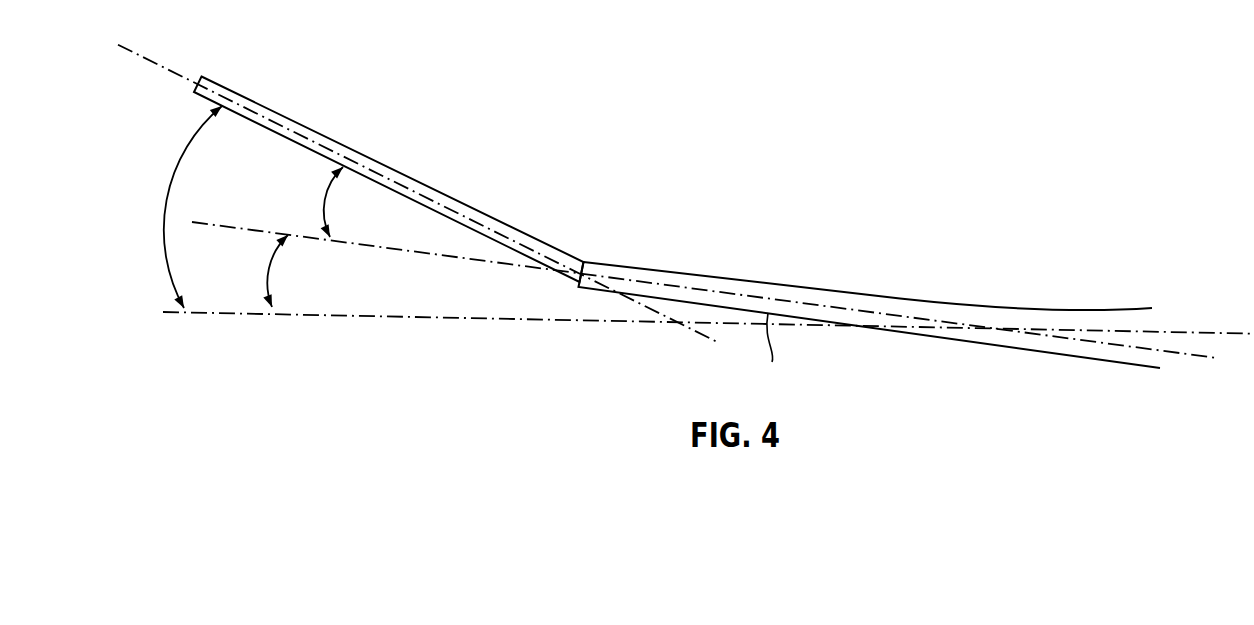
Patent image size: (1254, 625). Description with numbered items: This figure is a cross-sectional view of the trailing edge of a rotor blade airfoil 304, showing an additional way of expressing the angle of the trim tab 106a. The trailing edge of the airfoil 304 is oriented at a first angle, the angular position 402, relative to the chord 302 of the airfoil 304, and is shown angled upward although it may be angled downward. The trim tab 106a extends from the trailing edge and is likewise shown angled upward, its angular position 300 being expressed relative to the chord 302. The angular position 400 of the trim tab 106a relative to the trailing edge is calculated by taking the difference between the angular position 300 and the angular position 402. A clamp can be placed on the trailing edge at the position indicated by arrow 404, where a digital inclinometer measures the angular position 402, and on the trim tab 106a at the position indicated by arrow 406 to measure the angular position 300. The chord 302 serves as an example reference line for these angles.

The trim tab 106a is at (667, 213).
The arrow indicating clamp position on trim tab 406 is at (386, 167).
The arrow indicating clamp position on trailing edge 404 is at (704, 266).
The airfoil 304 is at (1133, 307).
The chord 302 is at (1197, 332).
The angular position of trim tab relative to chord 300 is at (175, 175).
The angular position of trim tab relative to trailing edge 400 is at (331, 190).
The angular position of trailing edge relative to chord 402 is at (268, 281).